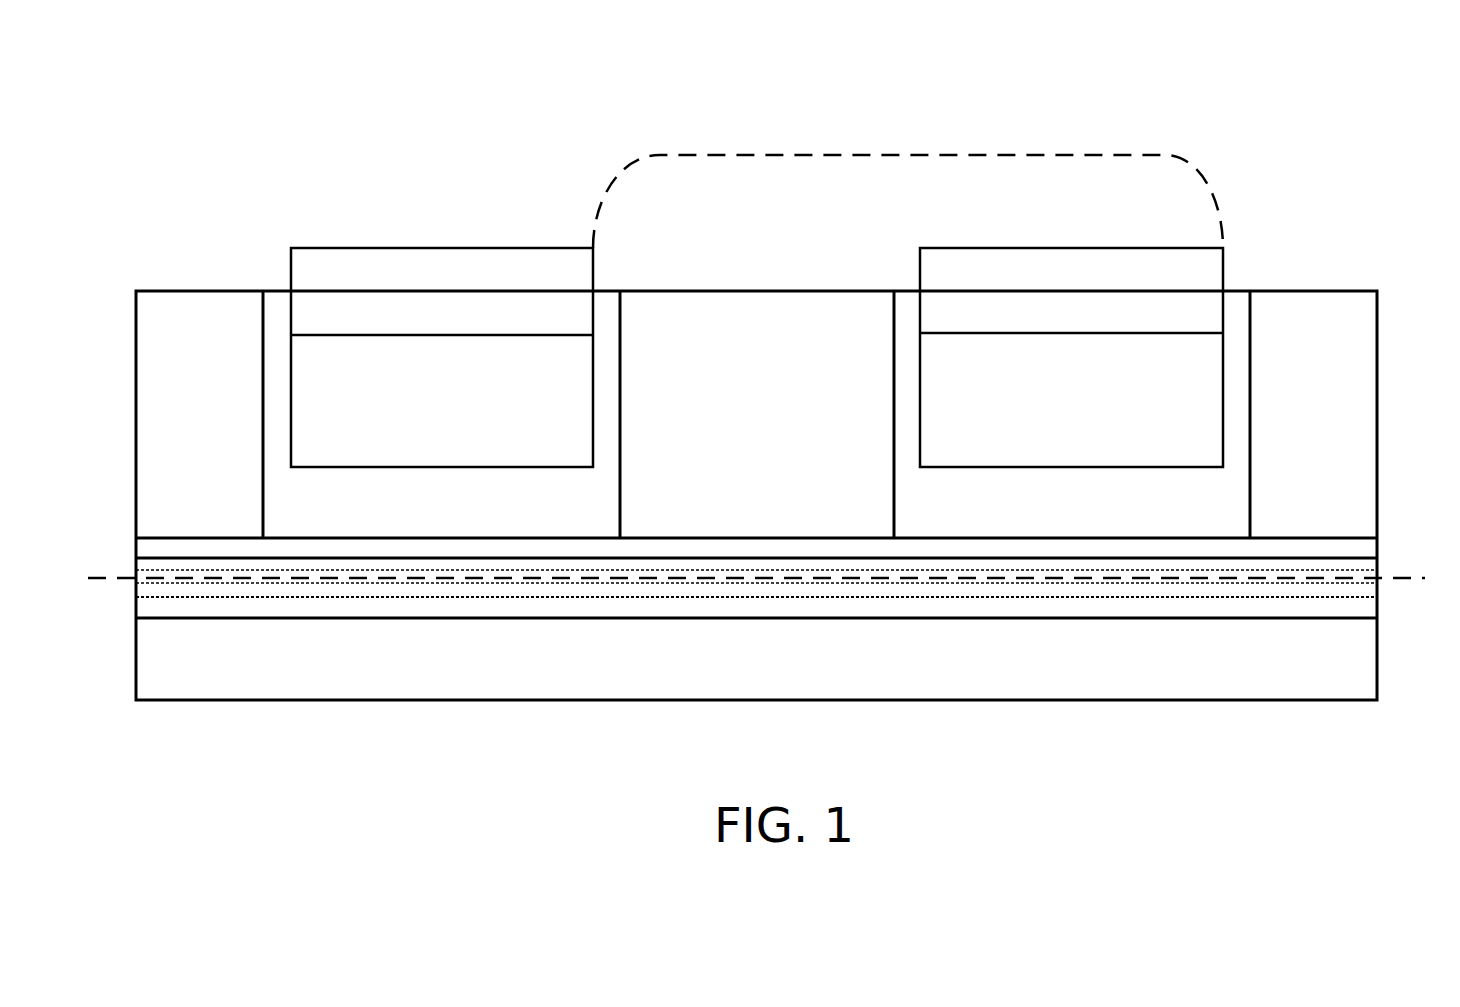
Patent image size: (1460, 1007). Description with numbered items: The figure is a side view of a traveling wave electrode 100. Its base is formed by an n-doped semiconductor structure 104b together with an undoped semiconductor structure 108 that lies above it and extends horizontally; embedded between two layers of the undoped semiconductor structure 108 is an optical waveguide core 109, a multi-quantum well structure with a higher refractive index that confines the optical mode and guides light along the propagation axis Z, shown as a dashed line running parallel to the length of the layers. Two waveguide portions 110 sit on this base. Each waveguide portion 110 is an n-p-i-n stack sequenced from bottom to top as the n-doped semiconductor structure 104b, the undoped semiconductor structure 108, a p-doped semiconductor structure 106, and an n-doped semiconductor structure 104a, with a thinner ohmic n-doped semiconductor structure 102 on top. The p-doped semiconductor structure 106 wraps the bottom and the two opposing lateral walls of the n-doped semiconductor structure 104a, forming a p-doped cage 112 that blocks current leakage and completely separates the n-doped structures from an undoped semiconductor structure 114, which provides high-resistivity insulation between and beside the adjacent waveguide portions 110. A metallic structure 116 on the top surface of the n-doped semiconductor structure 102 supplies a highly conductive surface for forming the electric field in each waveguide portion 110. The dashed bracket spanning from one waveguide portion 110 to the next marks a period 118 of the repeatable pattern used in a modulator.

The traveling wave electrode 100 is at (168, 130).
The n-doped semiconductor structure 102 is at (594, 308).
The n-doped semiconductor structure 104a is at (291, 350).
The n-doped semiconductor structure 104b is at (136, 685).
The p-doped semiconductor structure 106 is at (263, 350).
The undoped semiconductor structure 108 is at (136, 548).
The optical waveguide core 109 is at (1378, 586).
The waveguide portion 110 is at (322, 248).
The p-doped cage 112 is at (626, 336).
The undoped semiconductor structure 114 is at (136, 420).
The metallic structure 116 is at (543, 248).
The period 118 is at (895, 155).
The propagation axis Z is at (1425, 577).